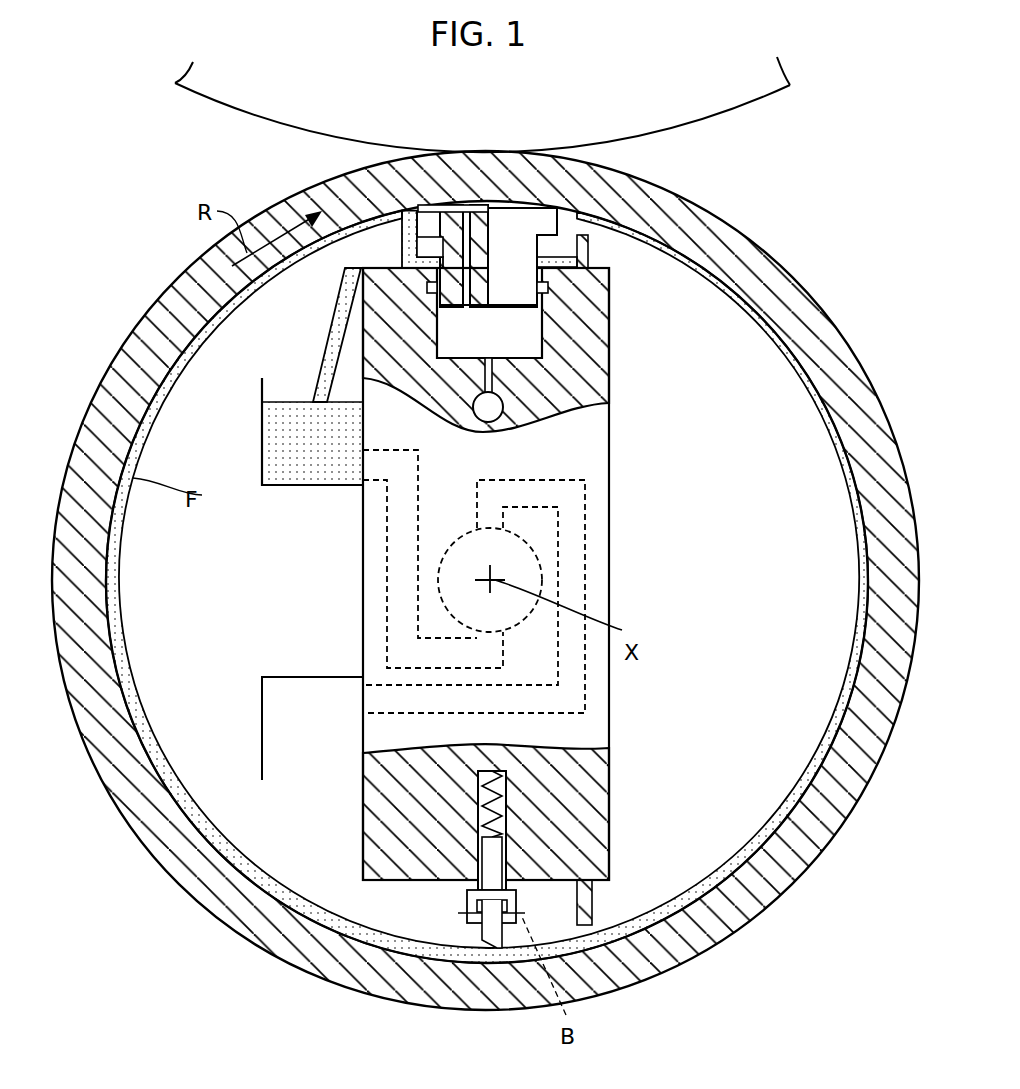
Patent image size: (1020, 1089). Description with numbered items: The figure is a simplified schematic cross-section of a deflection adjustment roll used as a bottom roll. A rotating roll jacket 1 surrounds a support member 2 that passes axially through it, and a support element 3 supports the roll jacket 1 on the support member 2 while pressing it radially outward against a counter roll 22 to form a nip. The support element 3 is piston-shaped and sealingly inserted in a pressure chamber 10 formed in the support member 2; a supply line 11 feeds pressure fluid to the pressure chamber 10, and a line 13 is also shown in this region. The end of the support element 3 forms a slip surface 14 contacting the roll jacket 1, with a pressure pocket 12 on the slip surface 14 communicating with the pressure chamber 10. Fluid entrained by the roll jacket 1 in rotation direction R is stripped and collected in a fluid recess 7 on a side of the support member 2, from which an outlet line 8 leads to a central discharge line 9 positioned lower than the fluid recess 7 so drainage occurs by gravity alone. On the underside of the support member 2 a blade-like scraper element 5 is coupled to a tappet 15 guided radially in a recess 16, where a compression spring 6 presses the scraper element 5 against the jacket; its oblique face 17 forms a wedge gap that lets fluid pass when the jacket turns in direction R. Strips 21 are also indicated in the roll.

The roll jacket 1 is at (723, 243).
The support member 2 is at (600, 460).
The support element 3 is at (498, 208).
The scraper element 5 is at (487, 930).
The compression spring 6 is at (483, 810).
The fluid recess 7 is at (262, 430).
The outlet line 8 is at (400, 618).
The central discharge line 9 is at (522, 565).
The pressure chamber 10 is at (530, 322).
The supply line 11 is at (490, 402).
The pressure pocket 12 is at (452, 207).
The line 13 is at (493, 207).
The slip surface 14 is at (525, 222).
The tappet 15 is at (490, 867).
The recess 16 is at (507, 797).
The oblique face 17 is at (498, 948).
The strips 21 is at (583, 250).
The counter roll 22 is at (268, 90).